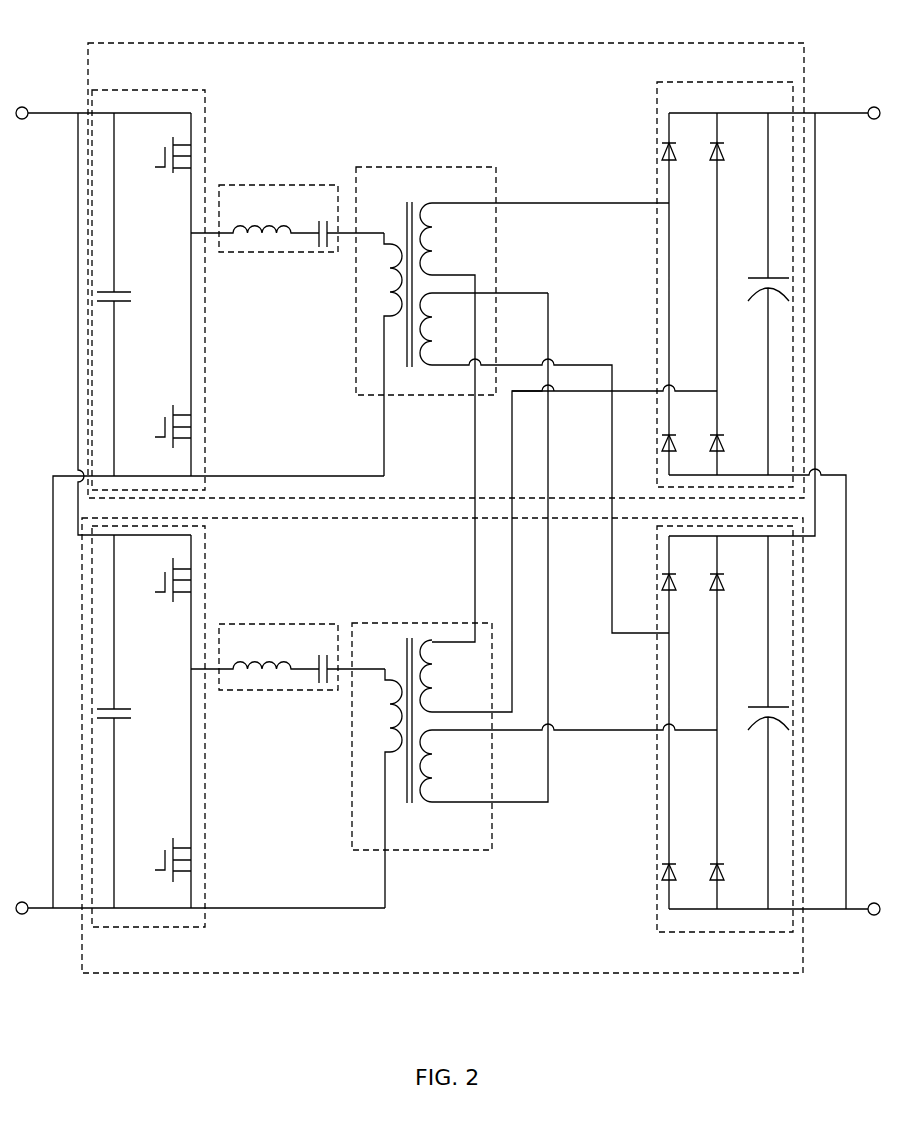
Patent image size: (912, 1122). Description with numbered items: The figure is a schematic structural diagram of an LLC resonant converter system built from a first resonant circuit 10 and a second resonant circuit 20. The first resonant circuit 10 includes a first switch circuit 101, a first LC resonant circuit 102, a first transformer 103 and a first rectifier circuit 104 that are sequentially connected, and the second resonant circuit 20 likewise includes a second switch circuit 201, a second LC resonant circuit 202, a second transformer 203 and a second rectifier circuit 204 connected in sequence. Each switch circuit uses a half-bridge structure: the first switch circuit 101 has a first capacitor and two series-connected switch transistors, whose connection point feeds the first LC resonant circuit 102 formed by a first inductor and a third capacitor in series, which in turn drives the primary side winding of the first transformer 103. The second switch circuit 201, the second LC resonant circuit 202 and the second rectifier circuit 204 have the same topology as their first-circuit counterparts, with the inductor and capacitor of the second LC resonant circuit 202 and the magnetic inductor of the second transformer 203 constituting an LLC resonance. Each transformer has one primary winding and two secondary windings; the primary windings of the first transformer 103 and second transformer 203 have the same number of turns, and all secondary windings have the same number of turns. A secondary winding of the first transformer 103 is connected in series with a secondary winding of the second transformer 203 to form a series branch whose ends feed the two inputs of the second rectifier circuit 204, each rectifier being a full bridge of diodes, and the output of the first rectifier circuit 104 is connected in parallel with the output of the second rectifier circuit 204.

The first resonant circuit 10 is at (440, 43).
The second resonant circuit 20 is at (418, 973).
The first switch circuit 101 is at (145, 90).
The first LC resonant circuit 102 is at (288, 185).
The first transformer 103 is at (425, 167).
The first rectifier circuit 104 is at (718, 82).
The second switch circuit 201 is at (145, 927).
The second LC resonant circuit 202 is at (270, 624).
The second transformer 203 is at (410, 623).
The second rectifier circuit 204 is at (725, 932).